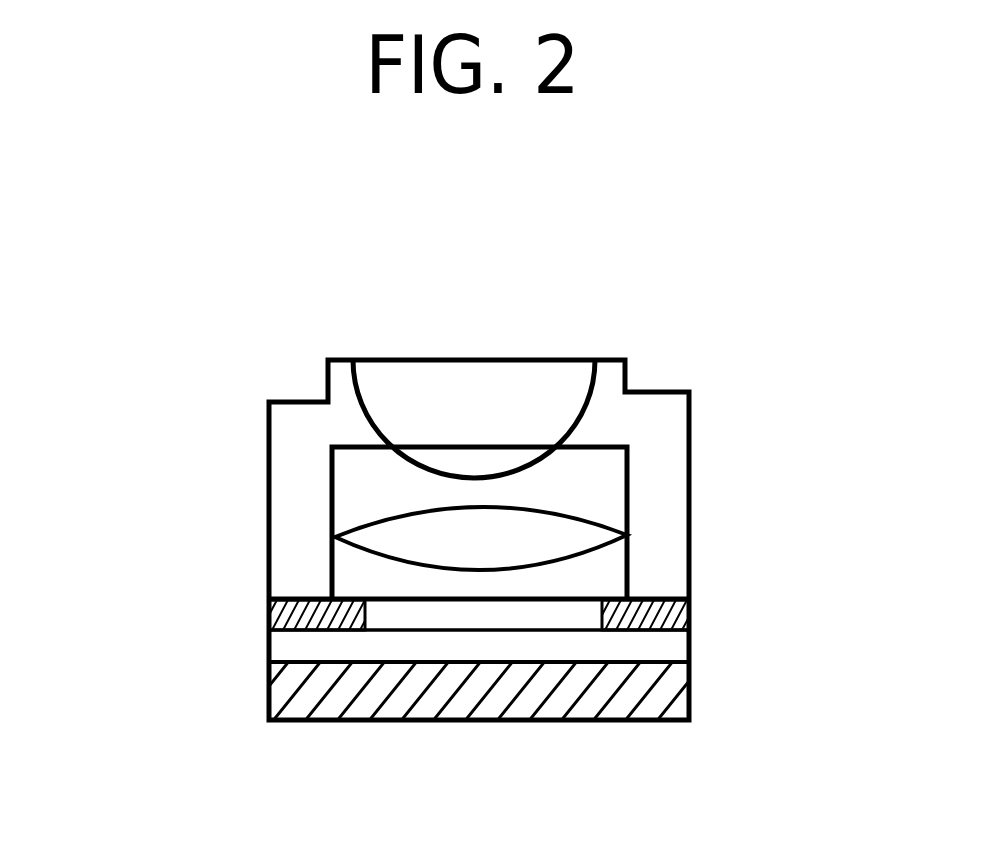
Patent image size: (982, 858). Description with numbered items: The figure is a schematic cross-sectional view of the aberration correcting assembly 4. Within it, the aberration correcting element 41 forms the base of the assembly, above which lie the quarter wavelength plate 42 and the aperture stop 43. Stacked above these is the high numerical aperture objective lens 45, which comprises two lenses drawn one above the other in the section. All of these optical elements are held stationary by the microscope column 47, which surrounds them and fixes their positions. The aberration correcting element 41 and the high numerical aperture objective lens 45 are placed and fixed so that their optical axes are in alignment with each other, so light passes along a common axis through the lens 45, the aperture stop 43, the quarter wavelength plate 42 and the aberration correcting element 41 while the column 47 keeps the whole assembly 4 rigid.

The aberration correcting assembly 4 is at (494, 247).
The aberration correcting element 41 is at (285, 688).
The quarter wavelength plate 42 is at (269, 623).
The aperture stop 43 is at (689, 617).
The high numerical aperture objective lens 45 is at (578, 516).
The microscope column 47 is at (269, 488).